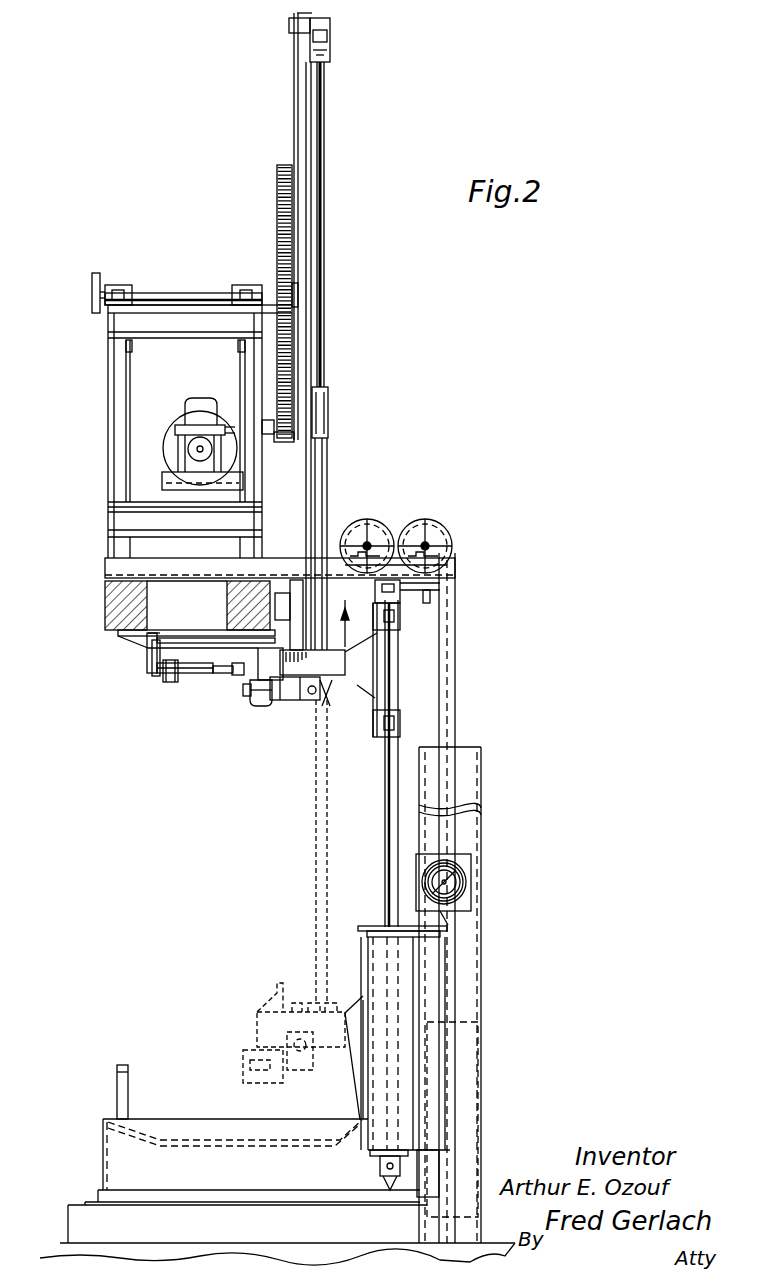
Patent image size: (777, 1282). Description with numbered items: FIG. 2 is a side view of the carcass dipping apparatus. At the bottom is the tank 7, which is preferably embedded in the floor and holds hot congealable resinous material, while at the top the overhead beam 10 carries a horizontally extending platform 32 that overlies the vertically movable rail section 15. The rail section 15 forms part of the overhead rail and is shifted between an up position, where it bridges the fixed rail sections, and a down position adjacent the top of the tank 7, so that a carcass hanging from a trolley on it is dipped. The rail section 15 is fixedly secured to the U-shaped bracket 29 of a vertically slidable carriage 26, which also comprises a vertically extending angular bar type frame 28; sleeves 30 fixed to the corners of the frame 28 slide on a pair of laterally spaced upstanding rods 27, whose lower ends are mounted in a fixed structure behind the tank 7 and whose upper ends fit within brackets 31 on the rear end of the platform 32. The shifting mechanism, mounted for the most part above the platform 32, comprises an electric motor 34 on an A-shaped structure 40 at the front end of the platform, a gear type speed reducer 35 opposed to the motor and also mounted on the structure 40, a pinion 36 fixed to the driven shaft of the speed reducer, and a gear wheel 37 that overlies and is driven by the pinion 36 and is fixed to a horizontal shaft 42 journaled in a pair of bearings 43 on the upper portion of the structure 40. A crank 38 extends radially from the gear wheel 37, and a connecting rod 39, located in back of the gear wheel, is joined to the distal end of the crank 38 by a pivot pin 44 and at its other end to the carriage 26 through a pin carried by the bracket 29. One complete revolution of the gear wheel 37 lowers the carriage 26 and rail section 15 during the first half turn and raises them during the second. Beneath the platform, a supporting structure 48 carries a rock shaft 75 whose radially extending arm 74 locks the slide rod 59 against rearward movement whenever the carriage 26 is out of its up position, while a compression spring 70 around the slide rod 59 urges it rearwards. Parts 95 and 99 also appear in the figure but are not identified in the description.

The tank 7 is at (122, 1158).
The overhead beam 10 is at (105, 610).
The vertically movable rail section 15 is at (250, 690).
The carriage 26 is at (353, 680).
The upstanding rods 27 is at (385, 790).
The angular bar type frame 28 is at (375, 732).
The U-shaped bracket 29 is at (335, 668).
The sleeves 30 is at (400, 622).
The brackets 31 is at (400, 602).
The platform 32 is at (455, 565).
The electric motor 34 is at (168, 438).
The gear type speed reducer 35 is at (205, 398).
The pinion 36 is at (285, 442).
The gear wheel 37 is at (298, 343).
The crank 38 is at (302, 317).
The connecting rod 39 is at (326, 262).
The A-shaped structure 40 is at (110, 450).
The horizontal shaft 42 is at (190, 292).
The bearings 43 is at (120, 285).
The pivot pin 44 is at (332, 26).
The supporting structure 48 is at (124, 636).
The slide rod 59 is at (195, 674).
The compression spring 70 is at (170, 682).
The radially extending arm 74 is at (146, 652).
The rock shaft 75 is at (252, 641).
The connector 95 is at (233, 676).
The member 99 is at (152, 660).